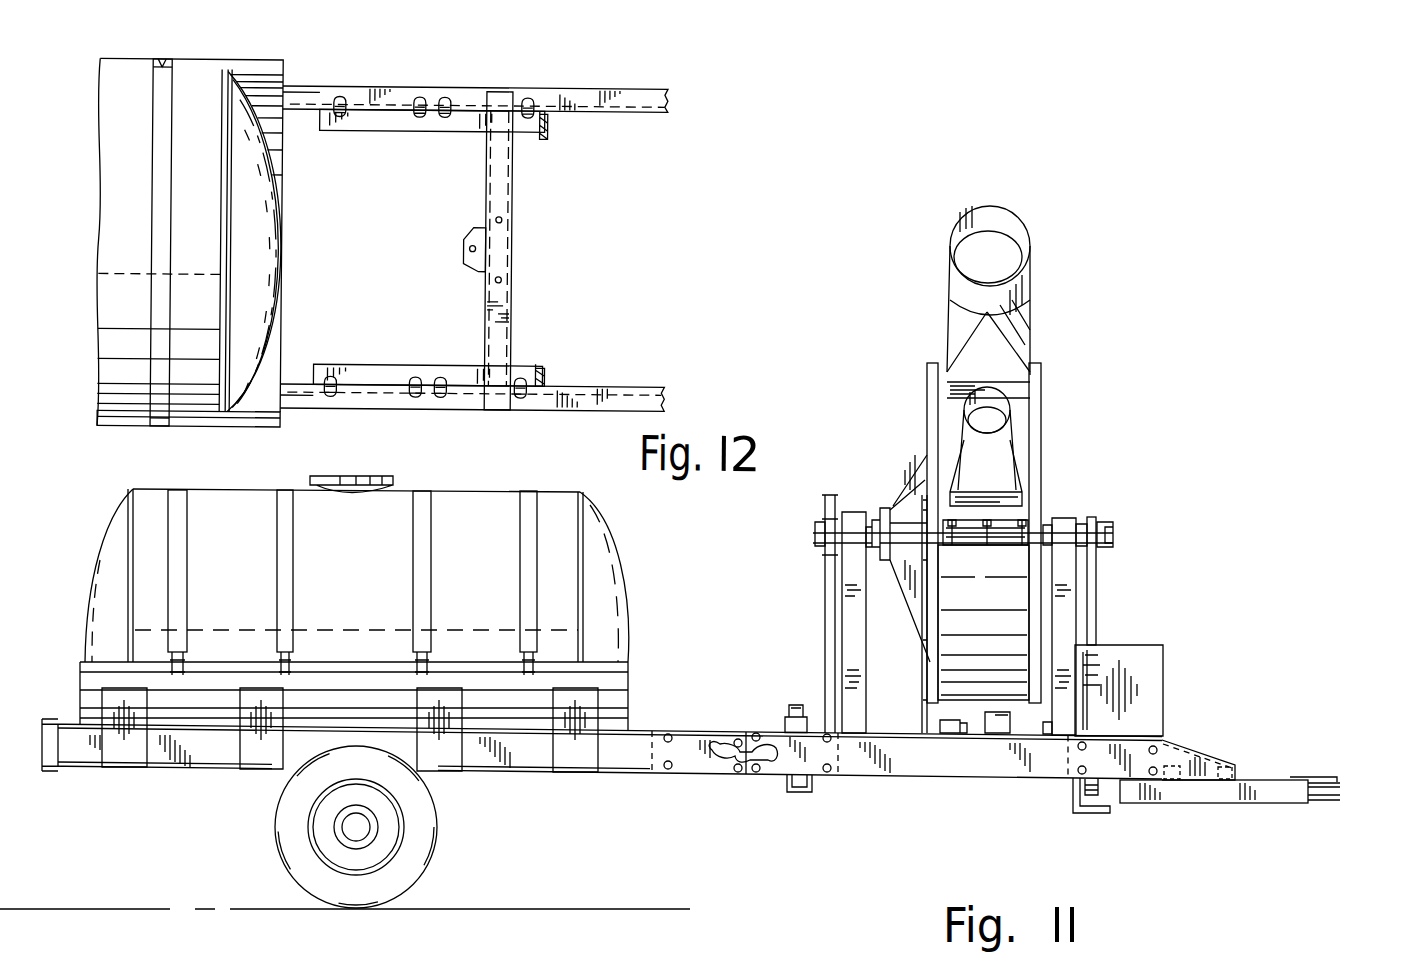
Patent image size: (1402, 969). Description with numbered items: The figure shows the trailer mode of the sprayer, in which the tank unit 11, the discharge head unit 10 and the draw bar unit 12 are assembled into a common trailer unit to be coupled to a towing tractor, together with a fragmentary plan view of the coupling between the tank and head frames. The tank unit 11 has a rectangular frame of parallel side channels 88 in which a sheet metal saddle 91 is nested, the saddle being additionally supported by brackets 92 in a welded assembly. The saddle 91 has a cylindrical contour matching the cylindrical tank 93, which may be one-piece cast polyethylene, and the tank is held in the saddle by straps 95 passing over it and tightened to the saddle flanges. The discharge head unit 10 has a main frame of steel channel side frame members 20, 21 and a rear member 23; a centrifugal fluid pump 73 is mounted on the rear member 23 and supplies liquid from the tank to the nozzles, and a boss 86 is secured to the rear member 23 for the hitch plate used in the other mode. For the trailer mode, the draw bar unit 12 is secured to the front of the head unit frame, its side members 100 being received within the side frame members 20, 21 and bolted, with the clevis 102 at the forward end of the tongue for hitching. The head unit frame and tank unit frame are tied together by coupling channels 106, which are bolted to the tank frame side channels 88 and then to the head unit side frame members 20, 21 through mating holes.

In FIG. 11, the discharge head unit 10 is at (1119, 376).
In FIG. 11, the tank unit 11 is at (339, 592).
In FIG. 11, the draw bar unit 12 is at (1259, 733).
In FIG. 12, the side frame member 20 is at (638, 400).
In FIG. 11, the side frame member 20 is at (967, 763).
In FIG. 12, the side frame member 21 is at (650, 108).
In FIG. 12, the rear member 23 is at (516, 350).
In FIG. 11, the centrifugal fluid pump 73 is at (786, 718).
In FIG. 12, the boss 86 is at (477, 262).
In FIG. 12, the side channel 88 is at (298, 98).
In FIG. 11, the side channel 88 is at (172, 767).
In FIG. 12, the sheet metal saddle 91 is at (272, 352).
In FIG. 12, the bracket 92 is at (246, 427).
In FIG. 12, the cylindrical tank 93 is at (108, 146).
In FIG. 11, the cylindrical tank 93 is at (466, 503).
In FIG. 12, the strap 95 is at (162, 208).
In FIG. 11, the side member 100 is at (1184, 760).
In FIG. 11, the clevis 102 is at (1317, 778).
In FIG. 12, the coupling channel 106 is at (404, 124).